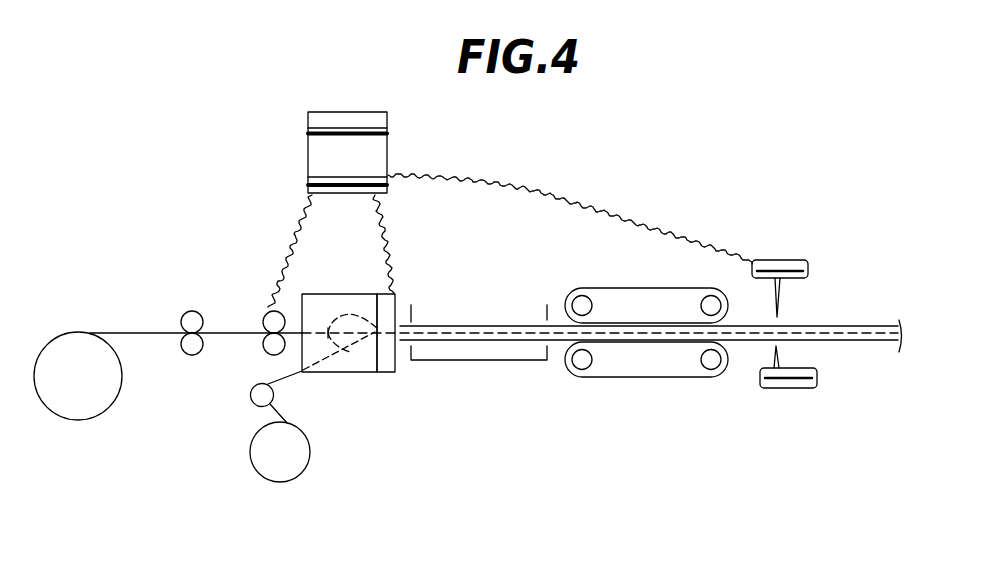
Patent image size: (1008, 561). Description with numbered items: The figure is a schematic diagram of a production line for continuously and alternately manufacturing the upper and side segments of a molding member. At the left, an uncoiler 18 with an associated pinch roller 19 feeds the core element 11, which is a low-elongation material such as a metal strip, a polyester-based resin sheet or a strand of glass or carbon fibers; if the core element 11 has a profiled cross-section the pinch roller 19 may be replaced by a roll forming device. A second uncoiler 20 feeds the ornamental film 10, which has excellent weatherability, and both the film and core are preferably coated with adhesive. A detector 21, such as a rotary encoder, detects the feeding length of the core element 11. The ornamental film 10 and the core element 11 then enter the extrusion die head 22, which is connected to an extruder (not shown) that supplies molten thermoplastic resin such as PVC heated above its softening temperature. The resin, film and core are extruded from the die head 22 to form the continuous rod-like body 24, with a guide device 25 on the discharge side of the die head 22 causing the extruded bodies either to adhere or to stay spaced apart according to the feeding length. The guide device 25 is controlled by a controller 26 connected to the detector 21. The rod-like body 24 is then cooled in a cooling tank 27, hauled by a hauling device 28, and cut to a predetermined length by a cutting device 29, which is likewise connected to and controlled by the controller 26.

The ornamental film 10 is at (275, 374).
The core element 11 is at (138, 331).
The uncoiler 18 is at (68, 400).
The pinch roller 19 is at (191, 310).
The uncoiler 20 is at (258, 478).
The detector 21 is at (262, 310).
The extrusion die head 22 is at (353, 373).
The continuous rod-like body 24 is at (403, 324).
The guide device 25 is at (390, 373).
The controller 26 is at (358, 110).
The cooling tank 27 is at (490, 362).
The hauling device 28 is at (648, 378).
The cutting device 29 is at (785, 260).